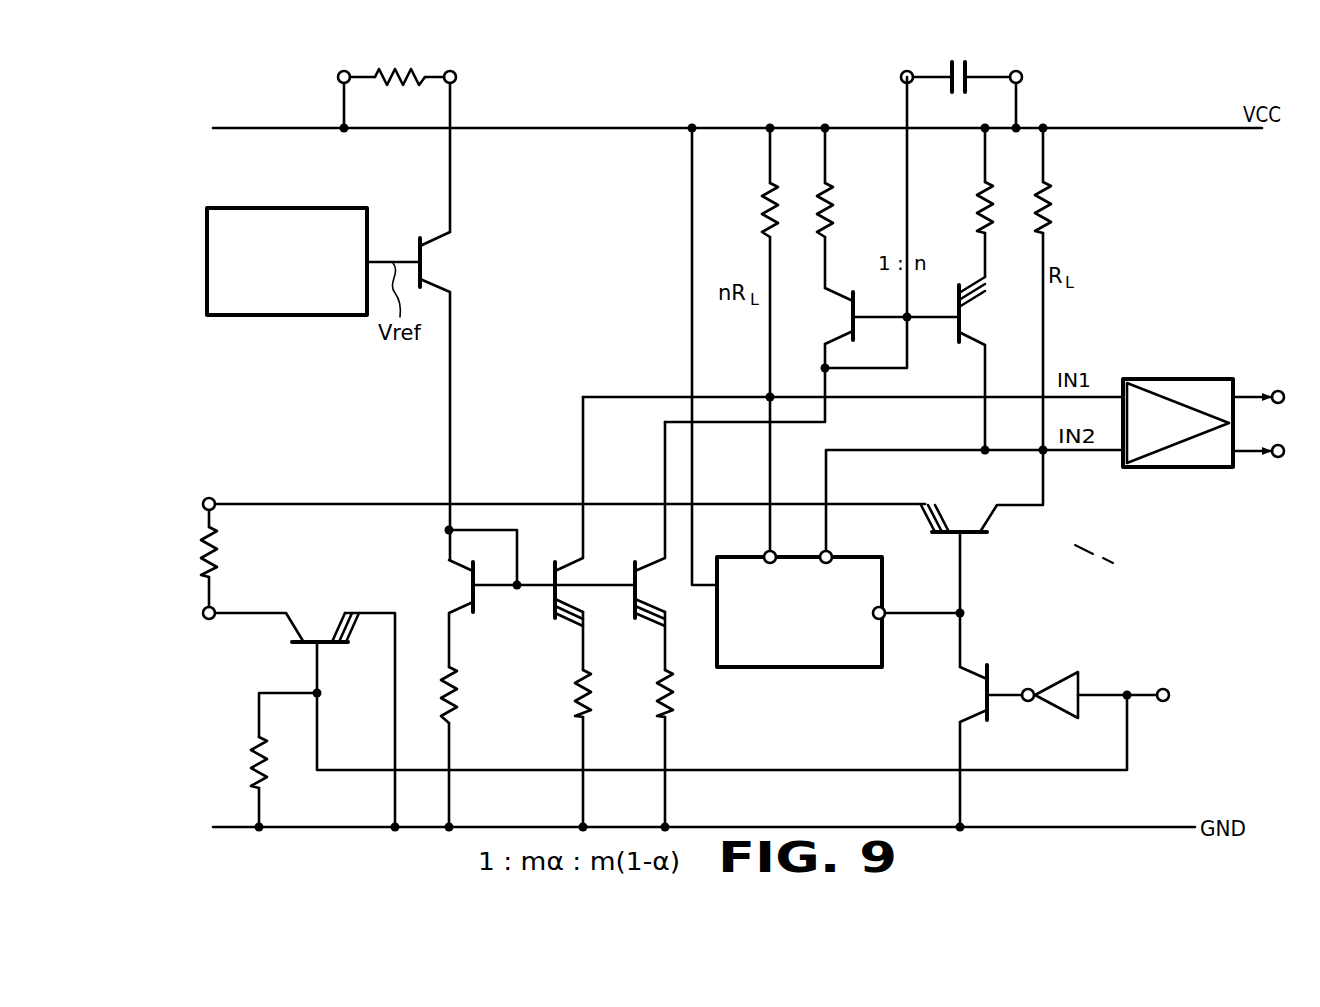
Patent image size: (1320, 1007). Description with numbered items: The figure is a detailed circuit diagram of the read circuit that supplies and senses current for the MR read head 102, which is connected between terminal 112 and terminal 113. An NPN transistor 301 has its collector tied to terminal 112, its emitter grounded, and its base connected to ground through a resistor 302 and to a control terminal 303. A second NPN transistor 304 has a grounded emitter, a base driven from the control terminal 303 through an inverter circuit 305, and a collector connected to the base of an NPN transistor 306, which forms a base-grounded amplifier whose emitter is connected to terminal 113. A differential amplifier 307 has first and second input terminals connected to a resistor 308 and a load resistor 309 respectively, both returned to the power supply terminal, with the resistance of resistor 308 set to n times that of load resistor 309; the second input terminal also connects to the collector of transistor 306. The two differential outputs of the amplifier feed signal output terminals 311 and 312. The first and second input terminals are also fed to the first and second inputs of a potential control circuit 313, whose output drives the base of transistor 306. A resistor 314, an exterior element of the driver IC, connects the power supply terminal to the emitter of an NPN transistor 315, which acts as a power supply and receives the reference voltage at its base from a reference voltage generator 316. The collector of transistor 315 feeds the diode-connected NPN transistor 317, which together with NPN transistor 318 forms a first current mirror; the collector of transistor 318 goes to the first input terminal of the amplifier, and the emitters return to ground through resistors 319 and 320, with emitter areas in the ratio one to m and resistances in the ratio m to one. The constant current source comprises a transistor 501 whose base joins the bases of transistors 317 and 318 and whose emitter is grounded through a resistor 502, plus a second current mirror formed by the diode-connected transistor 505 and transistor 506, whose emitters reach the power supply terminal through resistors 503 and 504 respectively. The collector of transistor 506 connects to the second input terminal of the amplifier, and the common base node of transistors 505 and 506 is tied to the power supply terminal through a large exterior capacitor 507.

The MR read head 102 is at (221, 553).
The terminal 112 is at (213, 622).
The terminal 113 is at (212, 498).
The NPN transistor 301 is at (318, 632).
The resistor 302 is at (253, 759).
The control terminal 303 is at (1163, 702).
The NPN transistor 304 is at (974, 667).
The inverter circuit 305 is at (1060, 672).
The NPN transistor 306 is at (995, 520).
The differential amplifier 307 is at (1160, 378).
The resistor 308 is at (767, 223).
The load resistor 309 is at (1052, 217).
The signal output terminal 311 is at (1278, 391).
The signal output terminal 312 is at (1278, 458).
The potential control circuit 313 is at (797, 668).
The resistor 314 is at (400, 63).
The NPN transistor 315 is at (448, 250).
The reference voltage generator 316 is at (338, 207).
The NPN transistor 317 is at (478, 600).
The NPN transistor 318 is at (578, 597).
The resistor 319 is at (462, 700).
The resistor 320 is at (590, 698).
The transistor 501 is at (650, 588).
The resistor 502 is at (675, 696).
The resistor 503 is at (832, 208).
The resistor 504 is at (975, 200).
The transistor 505 is at (842, 320).
The transistor 506 is at (968, 318).
The capacitor 507 is at (978, 72).